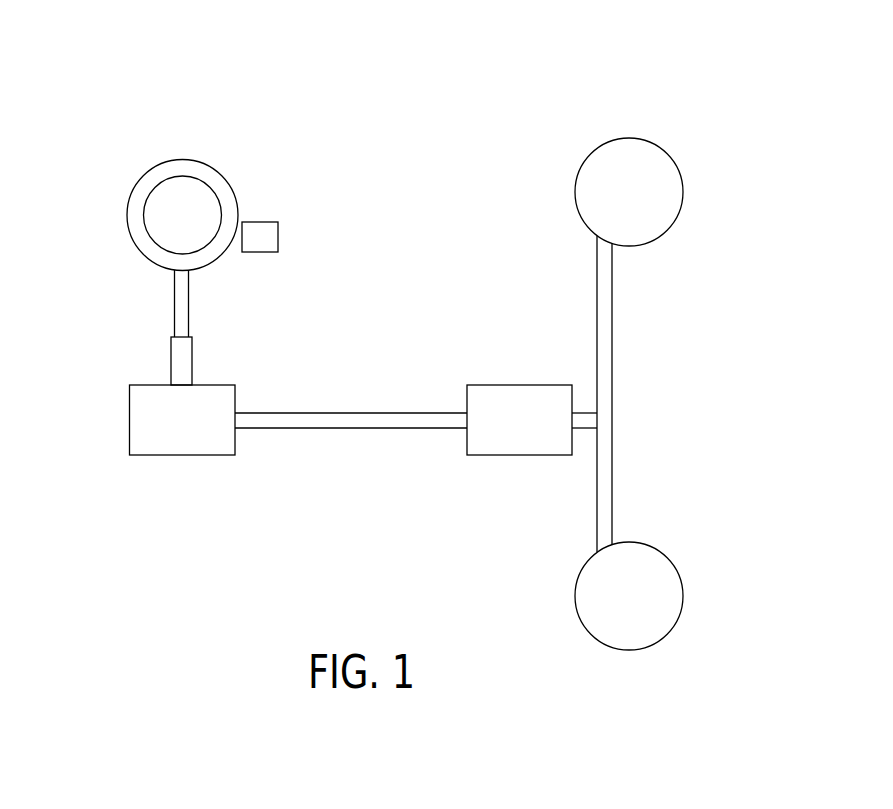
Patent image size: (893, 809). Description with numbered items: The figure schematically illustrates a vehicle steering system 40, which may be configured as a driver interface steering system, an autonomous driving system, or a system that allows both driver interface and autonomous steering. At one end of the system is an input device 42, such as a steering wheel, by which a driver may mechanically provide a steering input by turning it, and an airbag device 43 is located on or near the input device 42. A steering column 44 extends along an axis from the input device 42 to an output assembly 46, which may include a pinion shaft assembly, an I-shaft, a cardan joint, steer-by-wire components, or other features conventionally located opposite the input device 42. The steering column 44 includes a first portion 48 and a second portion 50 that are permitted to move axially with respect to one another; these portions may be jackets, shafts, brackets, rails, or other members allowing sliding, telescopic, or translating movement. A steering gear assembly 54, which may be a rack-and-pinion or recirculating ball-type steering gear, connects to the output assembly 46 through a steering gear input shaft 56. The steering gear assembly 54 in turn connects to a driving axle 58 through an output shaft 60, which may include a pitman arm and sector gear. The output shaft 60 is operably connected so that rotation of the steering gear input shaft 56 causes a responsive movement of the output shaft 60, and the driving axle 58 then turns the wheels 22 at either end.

The wheels 22 is at (685, 188).
The steering system 40 is at (612, 95).
The input device 42 is at (135, 190).
The airbag device 43 is at (278, 235).
The steering column 44 is at (182, 326).
The output assembly 46 is at (178, 456).
The first portion 48 is at (204, 300).
The second portion 50 is at (206, 363).
The steering gear assembly 54 is at (530, 456).
The steering gear input shaft 56 is at (435, 412).
The driving axle 58 is at (612, 462).
The output shaft 60 is at (588, 413).